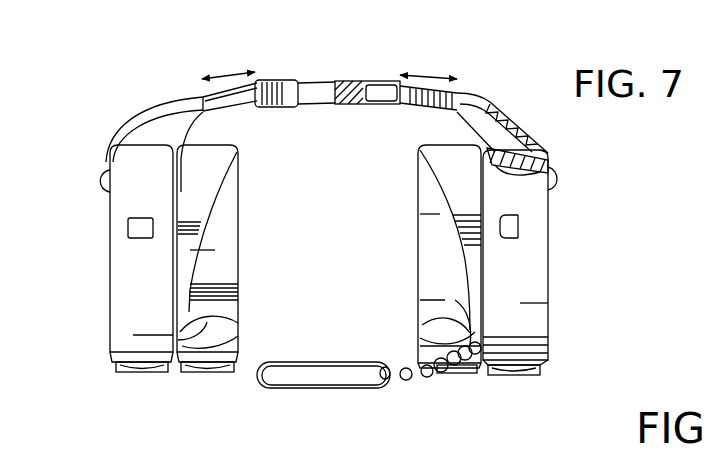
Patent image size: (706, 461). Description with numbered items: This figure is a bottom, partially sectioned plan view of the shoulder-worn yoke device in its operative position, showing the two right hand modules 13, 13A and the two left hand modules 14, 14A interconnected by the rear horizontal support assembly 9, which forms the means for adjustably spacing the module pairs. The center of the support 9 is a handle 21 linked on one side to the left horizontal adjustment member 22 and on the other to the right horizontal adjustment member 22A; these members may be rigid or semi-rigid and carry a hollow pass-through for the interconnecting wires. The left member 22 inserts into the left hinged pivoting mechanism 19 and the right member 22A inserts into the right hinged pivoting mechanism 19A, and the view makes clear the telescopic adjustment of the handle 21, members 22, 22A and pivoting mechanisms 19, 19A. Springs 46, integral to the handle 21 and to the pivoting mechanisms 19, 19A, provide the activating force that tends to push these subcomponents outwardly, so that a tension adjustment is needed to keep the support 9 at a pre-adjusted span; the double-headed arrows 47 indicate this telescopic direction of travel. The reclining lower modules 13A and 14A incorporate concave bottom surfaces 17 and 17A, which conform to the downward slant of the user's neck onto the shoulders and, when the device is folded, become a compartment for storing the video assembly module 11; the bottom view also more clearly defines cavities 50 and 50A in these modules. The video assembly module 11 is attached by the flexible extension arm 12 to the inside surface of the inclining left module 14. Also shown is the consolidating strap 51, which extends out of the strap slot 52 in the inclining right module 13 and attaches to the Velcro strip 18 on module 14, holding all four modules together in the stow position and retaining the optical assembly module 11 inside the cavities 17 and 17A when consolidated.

The horizontal support assembly 9 is at (341, 96).
The video assembly module 11 is at (310, 392).
The flexible extension arm 12 is at (440, 378).
The inclining right hand module 13 is at (552, 310).
The reclining right module 13A is at (415, 215).
The inclining left hand module 14 is at (108, 315).
The reclining left module 14A is at (236, 135).
The concave bottom surface 17 is at (438, 270).
The concave bottom surface 17A is at (216, 267).
The Velcro strip 18 is at (123, 233).
The left hinged pivoting mechanism 19 is at (106, 135).
The right hinged pivoting mechanism 19A is at (548, 138).
The handle 21 is at (305, 78).
The left horizontal adjustment member 22 is at (424, 112).
The right horizontal adjustment member 22A is at (200, 102).
The springs 46 is at (505, 110).
The adjustment direction 47 is at (226, 70).
The cavity 50 is at (458, 332).
The cavity 50A is at (196, 334).
The consolidating strap 51 is at (522, 222).
The strap slot 52 is at (519, 243).